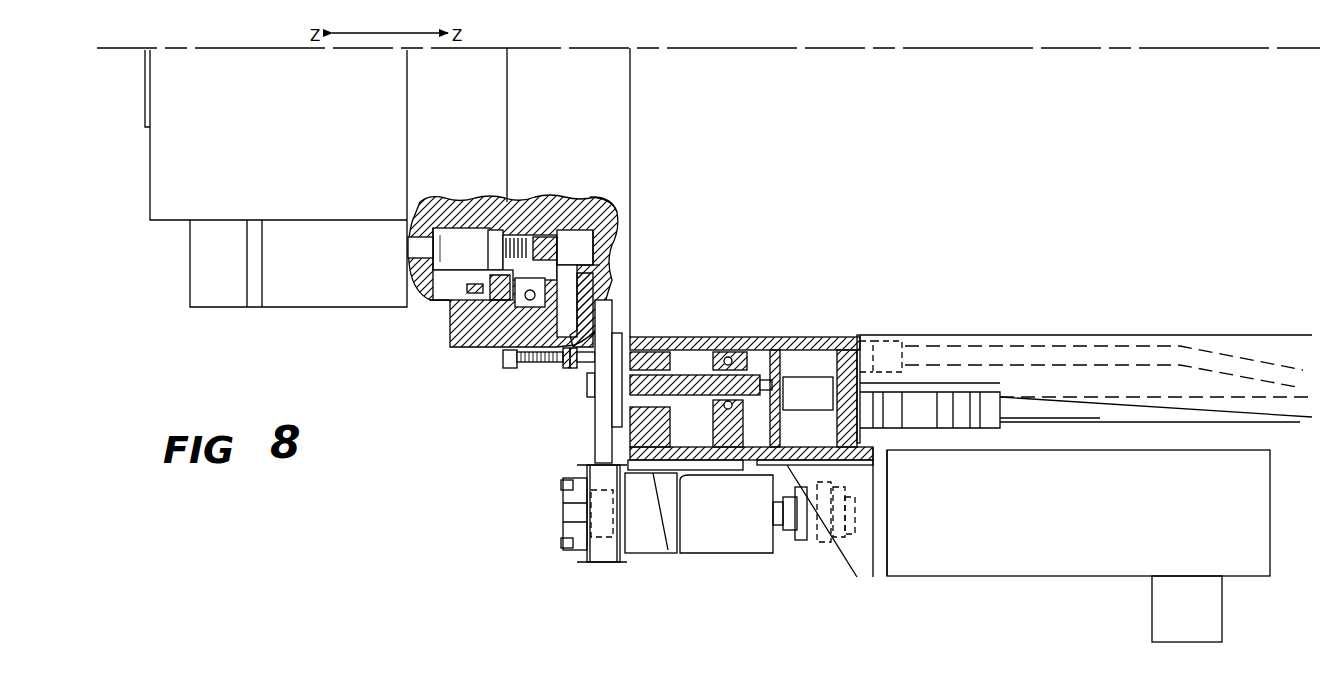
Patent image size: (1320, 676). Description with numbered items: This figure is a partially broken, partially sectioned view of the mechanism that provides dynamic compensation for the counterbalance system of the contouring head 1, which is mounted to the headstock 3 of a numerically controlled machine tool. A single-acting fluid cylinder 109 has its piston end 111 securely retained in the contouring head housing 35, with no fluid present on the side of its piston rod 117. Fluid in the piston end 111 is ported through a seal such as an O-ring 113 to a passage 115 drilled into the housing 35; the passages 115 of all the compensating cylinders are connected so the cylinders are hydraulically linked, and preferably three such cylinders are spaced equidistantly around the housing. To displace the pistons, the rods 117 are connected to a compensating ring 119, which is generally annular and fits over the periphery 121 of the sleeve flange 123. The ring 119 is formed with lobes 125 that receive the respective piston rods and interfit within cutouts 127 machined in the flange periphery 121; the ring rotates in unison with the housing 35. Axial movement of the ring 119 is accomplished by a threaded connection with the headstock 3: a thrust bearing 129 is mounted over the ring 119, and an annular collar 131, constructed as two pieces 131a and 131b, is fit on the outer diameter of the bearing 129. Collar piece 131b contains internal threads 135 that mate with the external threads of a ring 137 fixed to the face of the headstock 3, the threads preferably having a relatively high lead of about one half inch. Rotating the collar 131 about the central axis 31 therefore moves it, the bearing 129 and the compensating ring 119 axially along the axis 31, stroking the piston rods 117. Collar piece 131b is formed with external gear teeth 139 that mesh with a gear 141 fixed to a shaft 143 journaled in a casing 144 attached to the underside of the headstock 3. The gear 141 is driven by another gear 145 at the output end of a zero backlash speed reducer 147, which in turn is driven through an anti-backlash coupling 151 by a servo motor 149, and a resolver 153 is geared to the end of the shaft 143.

The contouring head 1 is at (186, 244).
The headstock 3 is at (922, 139).
The central axis 31 is at (797, 48).
The contouring head housing 35 is at (436, 306).
The fluid cylinder 109 is at (466, 232).
The piston end 111 is at (440, 233).
The O-ring 113 is at (430, 230).
The passage 115 is at (410, 247).
The piston rod 117 is at (513, 240).
The compensating ring 119 is at (562, 236).
The periphery 121 is at (600, 266).
The sleeve flange 123 is at (590, 198).
The lobes 125 is at (585, 250).
The cutouts 127 is at (598, 232).
The thrust bearing 129 is at (548, 290).
The annular collar 131 is at (497, 358).
The collar piece 131a is at (560, 365).
The collar piece 131b is at (572, 368).
The internal threads 135 is at (592, 340).
The ring 137 is at (605, 298).
The external gear teeth 139 is at (585, 366).
The gear 141 is at (597, 445).
The shaft 143 is at (700, 382).
The casing 144 is at (765, 350).
The gear 145 is at (598, 562).
The zero backlash speed reducer 147 is at (645, 543).
The servo motor 149 is at (1007, 566).
The anti-backlash coupling 151 is at (795, 540).
The resolver 153 is at (810, 385).